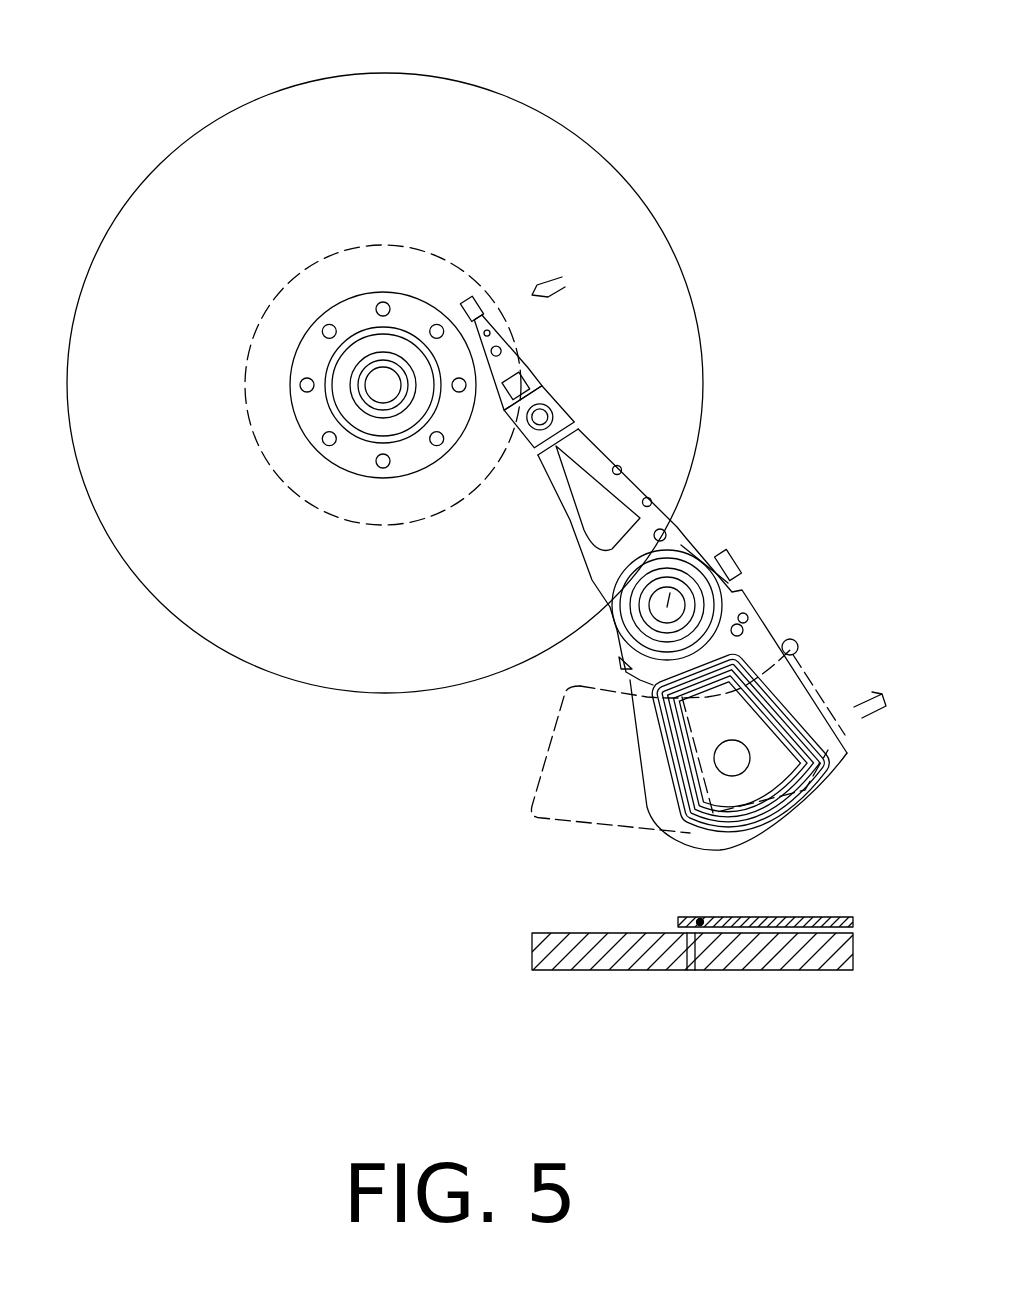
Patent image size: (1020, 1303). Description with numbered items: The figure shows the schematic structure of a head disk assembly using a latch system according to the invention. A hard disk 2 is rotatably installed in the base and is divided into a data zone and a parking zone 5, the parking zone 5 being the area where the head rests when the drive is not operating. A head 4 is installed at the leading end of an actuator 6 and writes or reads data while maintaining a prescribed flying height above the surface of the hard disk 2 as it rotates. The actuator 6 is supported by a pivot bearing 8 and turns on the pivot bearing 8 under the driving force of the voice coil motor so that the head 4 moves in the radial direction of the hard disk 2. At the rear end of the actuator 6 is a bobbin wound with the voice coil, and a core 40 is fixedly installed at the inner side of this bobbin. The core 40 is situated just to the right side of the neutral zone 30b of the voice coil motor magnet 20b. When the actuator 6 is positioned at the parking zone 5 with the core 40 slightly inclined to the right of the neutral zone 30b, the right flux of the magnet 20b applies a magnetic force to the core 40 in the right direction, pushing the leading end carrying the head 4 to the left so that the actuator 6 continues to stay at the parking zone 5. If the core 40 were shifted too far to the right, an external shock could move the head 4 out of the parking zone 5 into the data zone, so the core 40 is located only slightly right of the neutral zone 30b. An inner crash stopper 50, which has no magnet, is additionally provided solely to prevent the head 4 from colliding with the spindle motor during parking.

The hard disk 2 is at (477, 116).
The parking zone 5 is at (395, 262).
The head 4 is at (468, 289).
The pivot bearing 8 is at (688, 543).
The actuator 6 is at (766, 547).
The inner crash stopper 50 is at (799, 647).
The voice coil motor magnet 20b is at (563, 760).
The neutral zone 30b is at (692, 788).
The core 40 is at (700, 917).